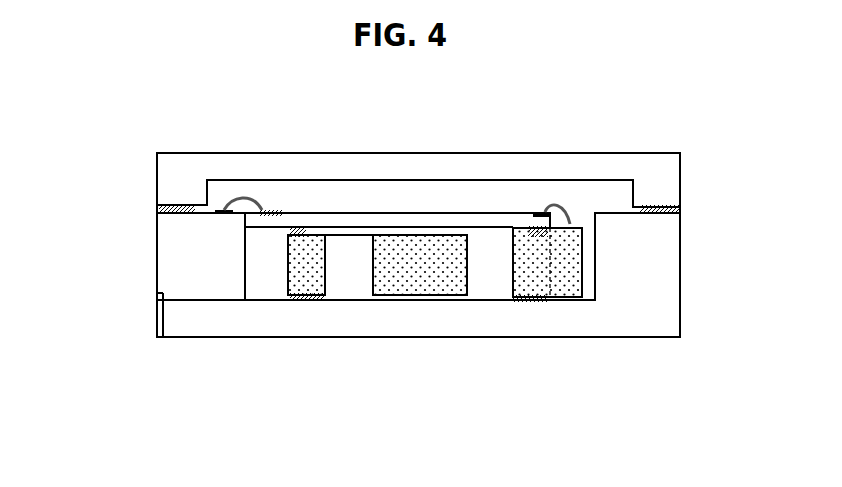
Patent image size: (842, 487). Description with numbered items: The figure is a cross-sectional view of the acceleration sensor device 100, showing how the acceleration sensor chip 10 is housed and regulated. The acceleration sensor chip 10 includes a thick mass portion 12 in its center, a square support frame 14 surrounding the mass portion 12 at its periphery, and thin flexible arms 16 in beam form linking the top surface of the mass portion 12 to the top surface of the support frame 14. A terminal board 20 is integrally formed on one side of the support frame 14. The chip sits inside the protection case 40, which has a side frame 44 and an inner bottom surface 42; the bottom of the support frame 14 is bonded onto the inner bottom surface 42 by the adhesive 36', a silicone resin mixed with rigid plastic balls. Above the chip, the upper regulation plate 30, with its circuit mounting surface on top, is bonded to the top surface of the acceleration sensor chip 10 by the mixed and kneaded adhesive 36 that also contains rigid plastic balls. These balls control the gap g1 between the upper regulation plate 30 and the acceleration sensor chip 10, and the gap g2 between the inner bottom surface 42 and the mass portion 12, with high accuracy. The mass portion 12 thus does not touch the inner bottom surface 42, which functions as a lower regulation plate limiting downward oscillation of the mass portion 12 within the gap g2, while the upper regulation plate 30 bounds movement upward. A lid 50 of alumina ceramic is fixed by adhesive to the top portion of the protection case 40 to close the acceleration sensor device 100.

The acceleration sensor device 100 is at (116, 133).
The lid 50 is at (200, 164).
The protection case 40 is at (355, 270).
The side frame 44 is at (190, 268).
The inner bottom surface 42 is at (258, 298).
The upper regulation plate 30 is at (310, 222).
The adhesive 36 is at (537, 171).
The adhesive 36' is at (522, 343).
The terminal board 20 is at (570, 283).
The acceleration sensor chip 10 is at (377, 327).
The support frame 14 is at (305, 302).
The flexible arms 16 is at (336, 237).
The mass portion 12 is at (385, 263).
The gap g1 is at (437, 232).
The gap g2 is at (416, 290).